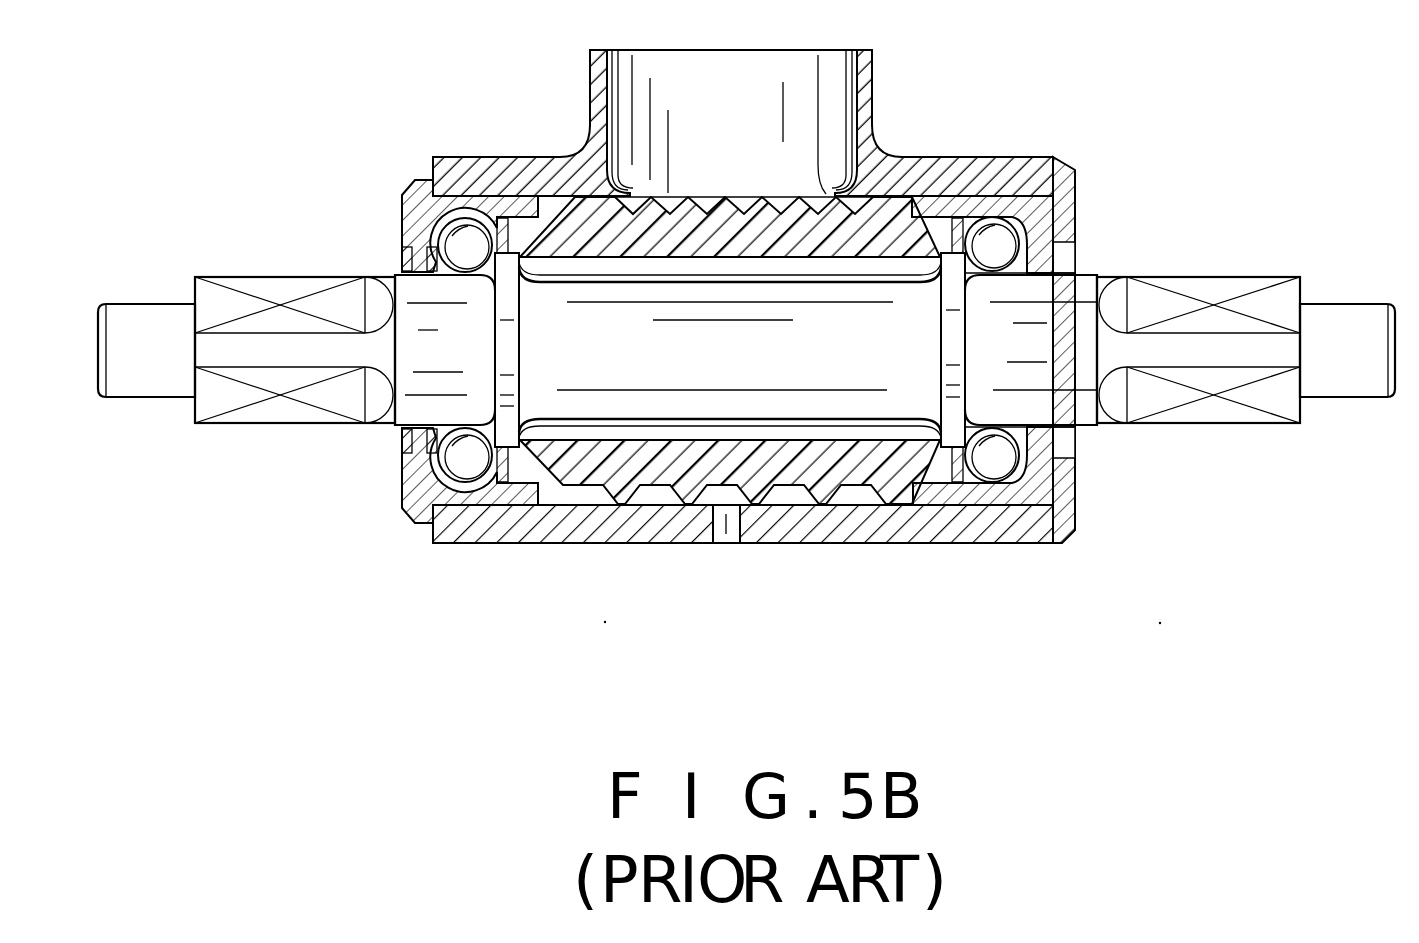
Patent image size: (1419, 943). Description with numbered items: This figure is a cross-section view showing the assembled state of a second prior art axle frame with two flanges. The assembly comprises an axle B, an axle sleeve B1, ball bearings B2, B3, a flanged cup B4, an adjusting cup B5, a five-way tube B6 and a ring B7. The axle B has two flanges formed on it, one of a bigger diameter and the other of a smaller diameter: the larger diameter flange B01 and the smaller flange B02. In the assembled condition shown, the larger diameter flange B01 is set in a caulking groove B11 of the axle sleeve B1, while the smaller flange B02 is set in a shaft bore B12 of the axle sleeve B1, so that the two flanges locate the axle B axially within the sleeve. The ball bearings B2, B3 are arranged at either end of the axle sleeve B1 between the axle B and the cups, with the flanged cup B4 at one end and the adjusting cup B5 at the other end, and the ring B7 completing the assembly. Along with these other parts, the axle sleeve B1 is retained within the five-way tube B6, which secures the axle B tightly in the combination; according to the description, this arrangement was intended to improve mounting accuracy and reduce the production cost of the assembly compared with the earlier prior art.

The axle B is at (283, 278).
The axle sleeve B1 is at (853, 215).
The ball bearing B2 is at (466, 232).
The ball bearing B3 is at (1006, 468).
The flanged cup B4 is at (400, 213).
The adjusting cup B5 is at (1055, 478).
The five-way tube B6 is at (970, 172).
The ring B7 is at (1072, 162).
The larger diameter flange B01 is at (508, 292).
The smaller diameter flange B02 is at (957, 343).
The caulking groove B11 is at (507, 437).
The shaft bore B12 is at (834, 440).